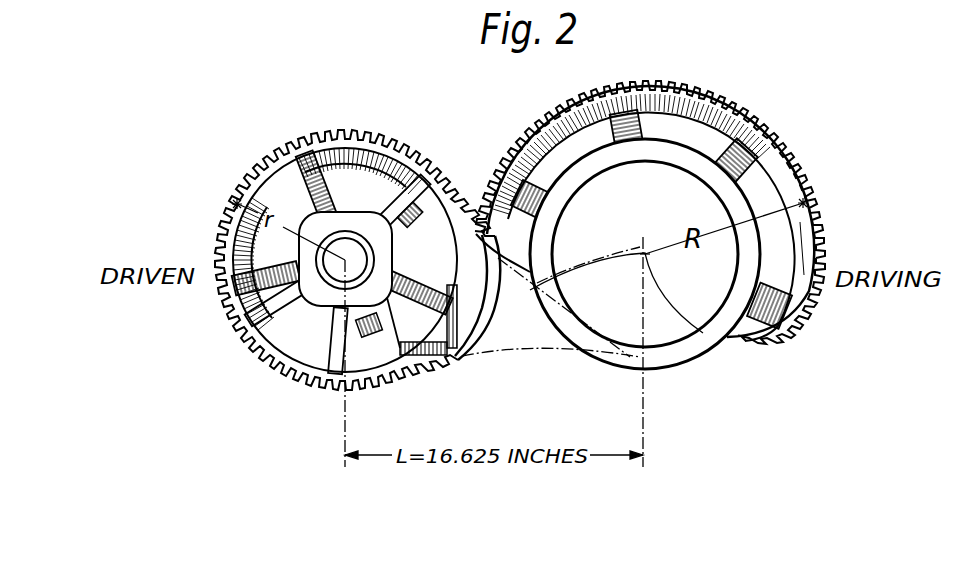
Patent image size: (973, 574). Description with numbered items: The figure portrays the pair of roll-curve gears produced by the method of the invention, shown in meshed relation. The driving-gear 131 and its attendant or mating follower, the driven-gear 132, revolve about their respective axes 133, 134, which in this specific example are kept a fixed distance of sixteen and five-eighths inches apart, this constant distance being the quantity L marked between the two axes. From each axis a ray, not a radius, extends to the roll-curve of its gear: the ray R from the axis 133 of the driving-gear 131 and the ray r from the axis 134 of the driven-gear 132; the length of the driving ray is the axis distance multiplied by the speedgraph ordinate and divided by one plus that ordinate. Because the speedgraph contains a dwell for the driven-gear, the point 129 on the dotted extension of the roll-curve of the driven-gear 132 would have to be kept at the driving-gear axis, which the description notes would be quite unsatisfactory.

The point on the dotted extension of the roll-curve 129 is at (627, 360).
The driving-gear 131 is at (757, 149).
The driven-gear 132 is at (237, 205).
The axis of the driving-gear 133 is at (645, 252).
The axis of the driven-gear 134 is at (346, 261).